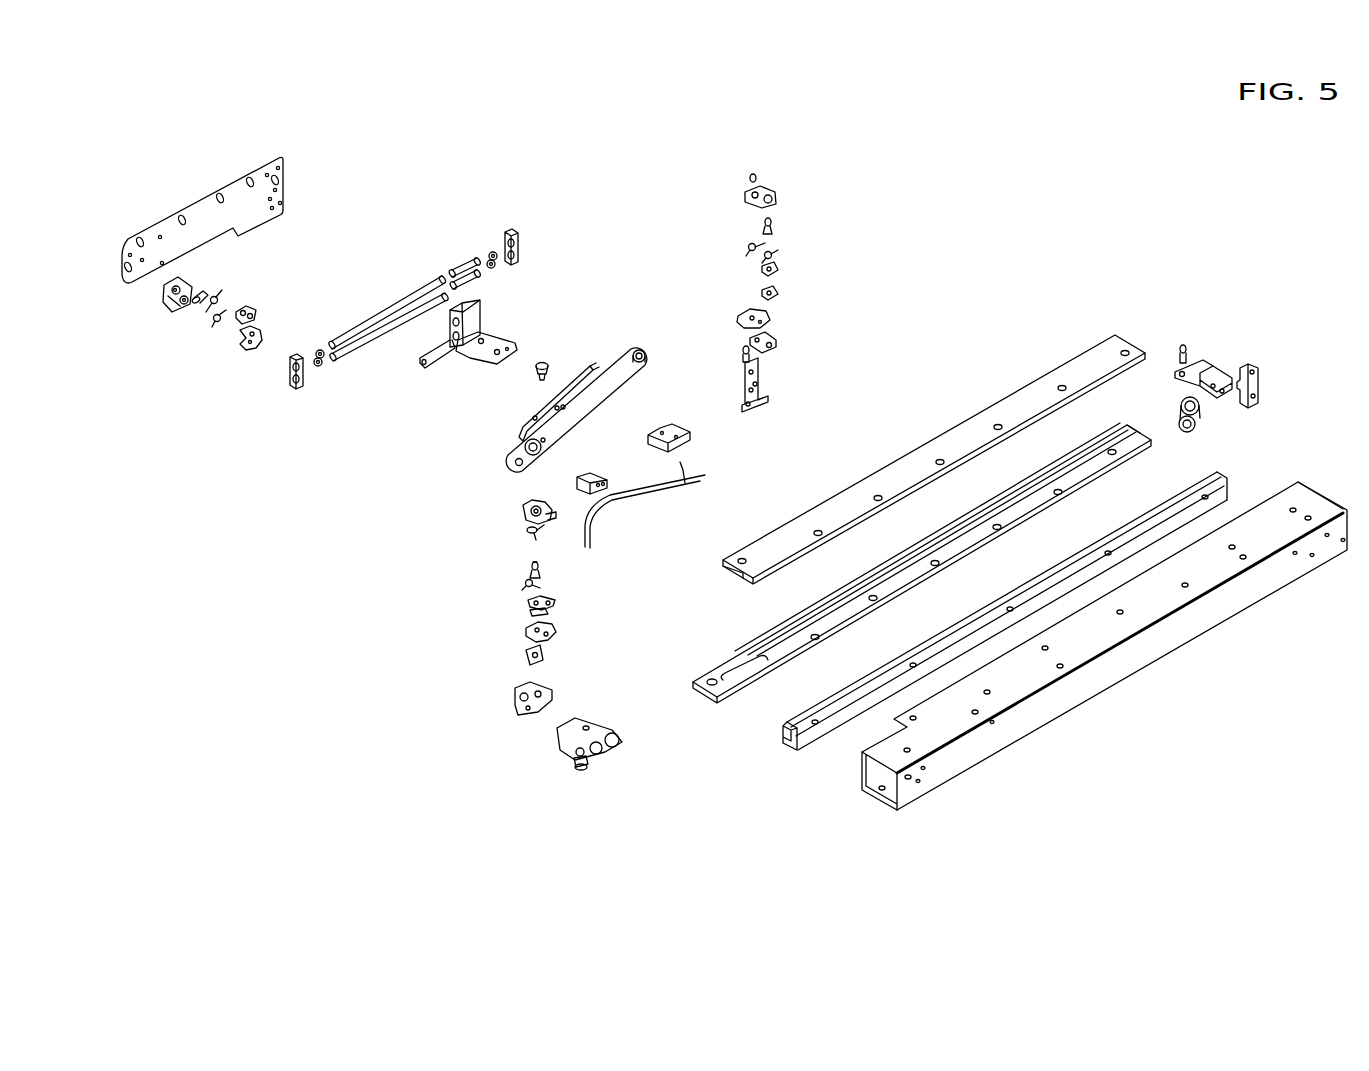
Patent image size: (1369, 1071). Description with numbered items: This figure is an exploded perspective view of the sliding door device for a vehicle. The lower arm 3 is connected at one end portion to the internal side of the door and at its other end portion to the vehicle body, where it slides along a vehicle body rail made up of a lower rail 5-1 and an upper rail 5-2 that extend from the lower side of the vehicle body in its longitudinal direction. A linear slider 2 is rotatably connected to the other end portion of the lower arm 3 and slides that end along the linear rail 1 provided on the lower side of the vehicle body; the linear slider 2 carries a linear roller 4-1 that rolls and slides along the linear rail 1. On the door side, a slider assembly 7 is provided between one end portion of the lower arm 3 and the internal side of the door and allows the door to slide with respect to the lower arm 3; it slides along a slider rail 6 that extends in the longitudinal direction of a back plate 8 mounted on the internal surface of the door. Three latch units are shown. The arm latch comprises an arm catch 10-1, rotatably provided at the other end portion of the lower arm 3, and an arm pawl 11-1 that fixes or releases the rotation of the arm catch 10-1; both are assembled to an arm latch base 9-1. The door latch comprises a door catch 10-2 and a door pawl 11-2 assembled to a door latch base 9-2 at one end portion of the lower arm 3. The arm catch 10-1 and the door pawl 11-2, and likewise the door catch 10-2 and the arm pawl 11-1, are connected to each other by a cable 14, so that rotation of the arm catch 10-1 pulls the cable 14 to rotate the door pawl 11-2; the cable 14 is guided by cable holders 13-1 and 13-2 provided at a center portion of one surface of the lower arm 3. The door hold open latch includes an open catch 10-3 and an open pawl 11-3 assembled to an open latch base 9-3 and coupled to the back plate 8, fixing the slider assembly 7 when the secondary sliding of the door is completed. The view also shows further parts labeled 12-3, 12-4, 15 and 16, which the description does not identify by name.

The linear rail 1 is at (787, 752).
The linear slider 2 is at (562, 752).
The lower arm 3 is at (608, 370).
The linear roller 4-1 is at (580, 770).
The lower rail 5-1 is at (713, 704).
The upper rail 5-2 is at (1130, 335).
The slider rail 6 is at (403, 293).
The slider assembly 7 is at (500, 337).
The back plate 8 is at (203, 205).
The arm latch base 9-1 is at (523, 516).
The door latch base 9-2 is at (772, 200).
The open latch base 9-3 is at (165, 296).
The arm catch 10-1 is at (523, 636).
The door catch 10-2 is at (738, 317).
The open catch 10-3 is at (247, 345).
The arm pawl 11-1 is at (530, 607).
The door pawl 11-2 is at (780, 270).
The open pawl 11-3 is at (245, 310).
The rod holder 12-3 is at (300, 393).
The rod holder 12-4 is at (520, 243).
The cable holder 13-1 is at (590, 474).
The cable holder 13-2 is at (690, 440).
The cable 14 is at (636, 502).
The L-bracket 15 is at (765, 383).
The angle rail 16 is at (863, 805).